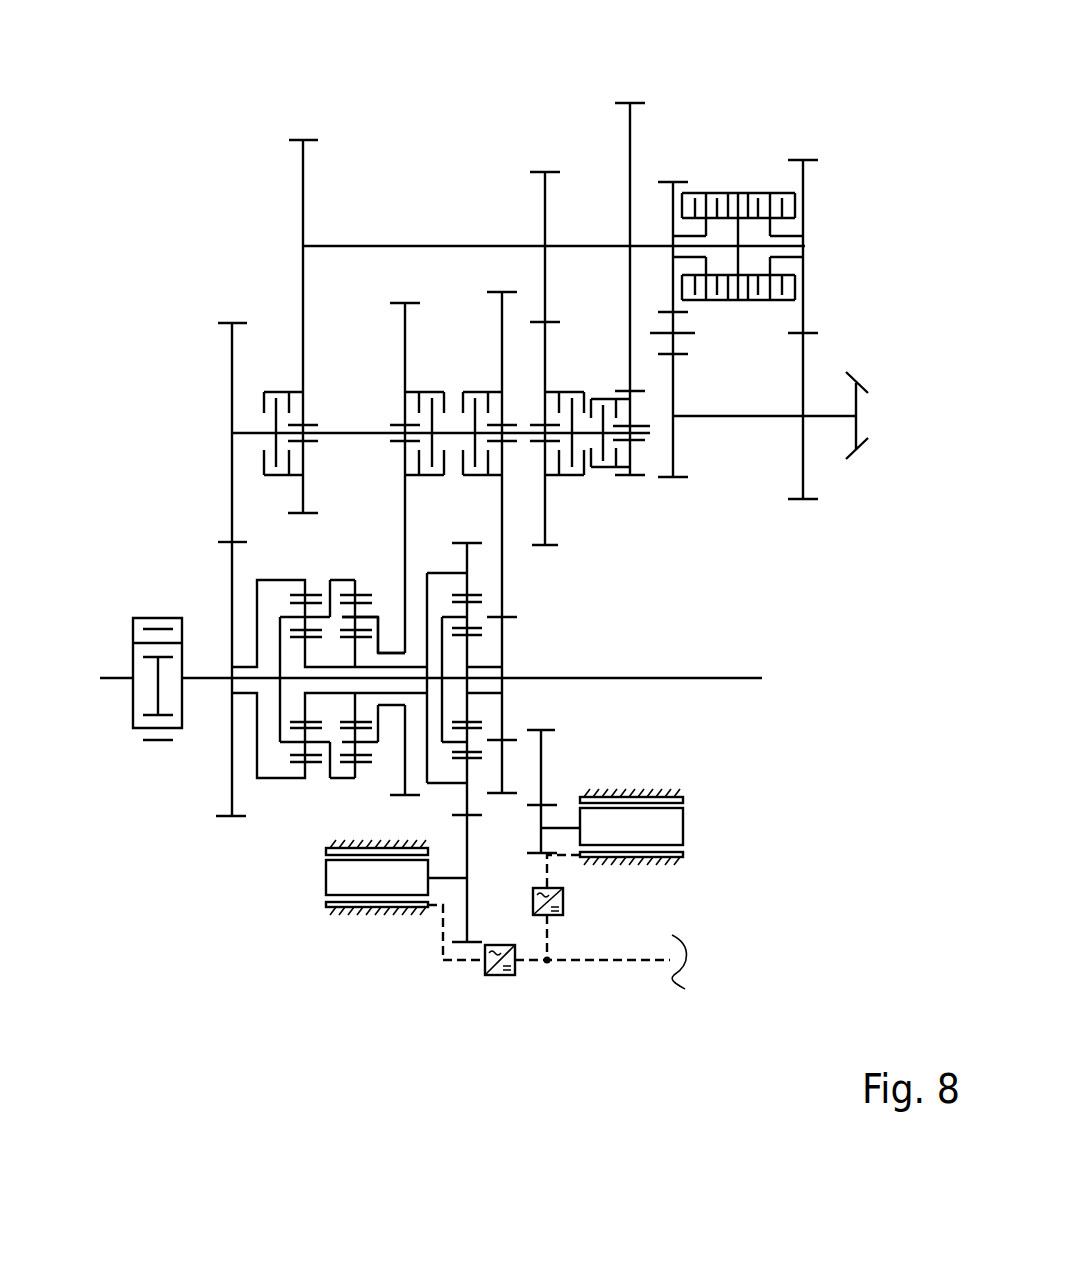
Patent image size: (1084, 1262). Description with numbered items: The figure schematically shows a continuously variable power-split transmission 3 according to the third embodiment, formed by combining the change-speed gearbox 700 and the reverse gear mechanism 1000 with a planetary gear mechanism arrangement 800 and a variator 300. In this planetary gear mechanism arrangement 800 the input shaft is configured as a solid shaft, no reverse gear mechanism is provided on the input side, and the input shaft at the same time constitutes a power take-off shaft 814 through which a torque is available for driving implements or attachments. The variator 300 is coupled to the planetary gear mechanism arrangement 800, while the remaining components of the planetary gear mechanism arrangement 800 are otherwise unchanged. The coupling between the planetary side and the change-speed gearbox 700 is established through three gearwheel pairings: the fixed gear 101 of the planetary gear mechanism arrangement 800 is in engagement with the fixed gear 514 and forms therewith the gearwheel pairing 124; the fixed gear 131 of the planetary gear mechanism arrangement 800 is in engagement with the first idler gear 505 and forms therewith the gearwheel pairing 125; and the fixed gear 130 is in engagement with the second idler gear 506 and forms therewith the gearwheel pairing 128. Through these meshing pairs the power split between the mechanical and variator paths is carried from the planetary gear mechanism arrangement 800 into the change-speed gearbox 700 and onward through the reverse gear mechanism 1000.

The continuously variable power-split transmission 3 is at (155, 95).
The first idler gear 505 is at (405, 345).
The second idler gear 506 is at (502, 345).
The change-speed gearbox 700 is at (507, 117).
The reverse gear mechanism 1000 is at (805, 90).
The fixed gear 514 is at (232, 370).
The gearwheel pairing 125 is at (372, 558).
The gearwheel pairing 124 is at (216, 526).
The fixed gear 101 is at (232, 610).
The power take-off shaft 814 is at (665, 680).
The planetary gear mechanism arrangement 800 is at (187, 853).
The fixed gear 131 is at (405, 752).
The gearwheel pairing 128 is at (517, 602).
The fixed gear 130 is at (503, 642).
The variator 300 is at (740, 991).